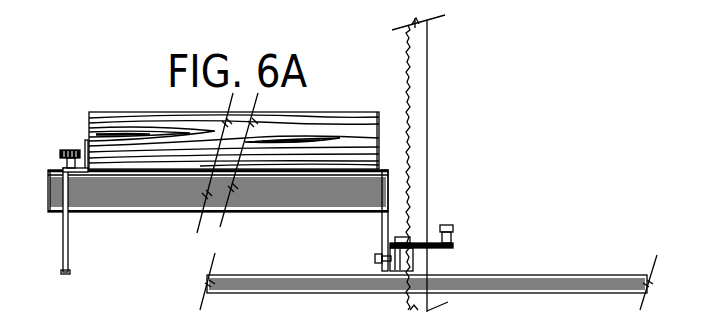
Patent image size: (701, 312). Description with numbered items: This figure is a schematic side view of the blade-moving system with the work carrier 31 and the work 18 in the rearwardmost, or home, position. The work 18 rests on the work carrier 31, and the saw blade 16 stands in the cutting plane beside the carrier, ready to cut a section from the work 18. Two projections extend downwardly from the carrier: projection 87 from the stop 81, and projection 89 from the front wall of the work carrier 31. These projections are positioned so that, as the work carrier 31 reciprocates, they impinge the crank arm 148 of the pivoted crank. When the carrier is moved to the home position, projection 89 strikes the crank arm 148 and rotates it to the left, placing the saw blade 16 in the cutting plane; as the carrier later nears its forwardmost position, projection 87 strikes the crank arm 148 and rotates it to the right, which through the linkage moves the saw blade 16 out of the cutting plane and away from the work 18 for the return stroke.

The saw blade 16 is at (420, 110).
The work 18 is at (121, 113).
The work carrier 31 is at (170, 198).
The stop 81 is at (87, 150).
The projection 87 is at (64, 258).
The projection 89 is at (382, 228).
The crank arm 148 is at (375, 258).